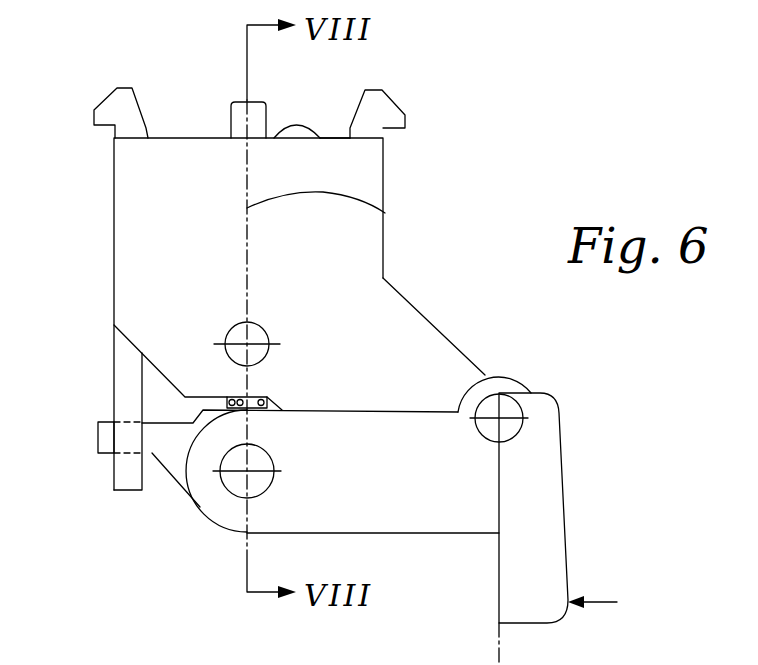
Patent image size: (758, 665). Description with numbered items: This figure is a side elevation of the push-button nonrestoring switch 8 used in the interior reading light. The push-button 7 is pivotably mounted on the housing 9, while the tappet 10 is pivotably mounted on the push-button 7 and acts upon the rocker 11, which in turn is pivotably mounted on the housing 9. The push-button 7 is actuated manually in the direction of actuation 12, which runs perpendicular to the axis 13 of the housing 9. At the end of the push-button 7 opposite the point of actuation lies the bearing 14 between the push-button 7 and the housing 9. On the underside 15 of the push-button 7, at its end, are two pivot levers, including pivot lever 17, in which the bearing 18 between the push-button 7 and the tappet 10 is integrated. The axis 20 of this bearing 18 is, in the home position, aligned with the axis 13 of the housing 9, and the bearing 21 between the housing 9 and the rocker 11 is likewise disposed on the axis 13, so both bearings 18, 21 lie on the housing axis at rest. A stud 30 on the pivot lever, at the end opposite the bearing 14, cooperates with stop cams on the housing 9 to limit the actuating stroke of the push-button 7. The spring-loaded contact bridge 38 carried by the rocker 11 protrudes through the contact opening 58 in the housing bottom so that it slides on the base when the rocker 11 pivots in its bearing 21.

The push-button 7 is at (568, 522).
The push-button nonrestoring switch 8 is at (410, 176).
The housing 9 is at (393, 287).
The tappet 10 is at (234, 460).
The rocker 11 is at (232, 353).
The direction of actuation 12 is at (598, 602).
The axis of housing 13 is at (385, 213).
The bearing 14 is at (500, 418).
The underside 15 is at (499, 585).
The pivot lever 17 is at (373, 535).
The bearing 18 is at (243, 472).
The axis of bearing 20 is at (247, 428).
The bearing 21 is at (243, 343).
The stud 30 is at (98, 438).
The contact bridge 38 is at (291, 126).
The contact opening 58 is at (333, 116).